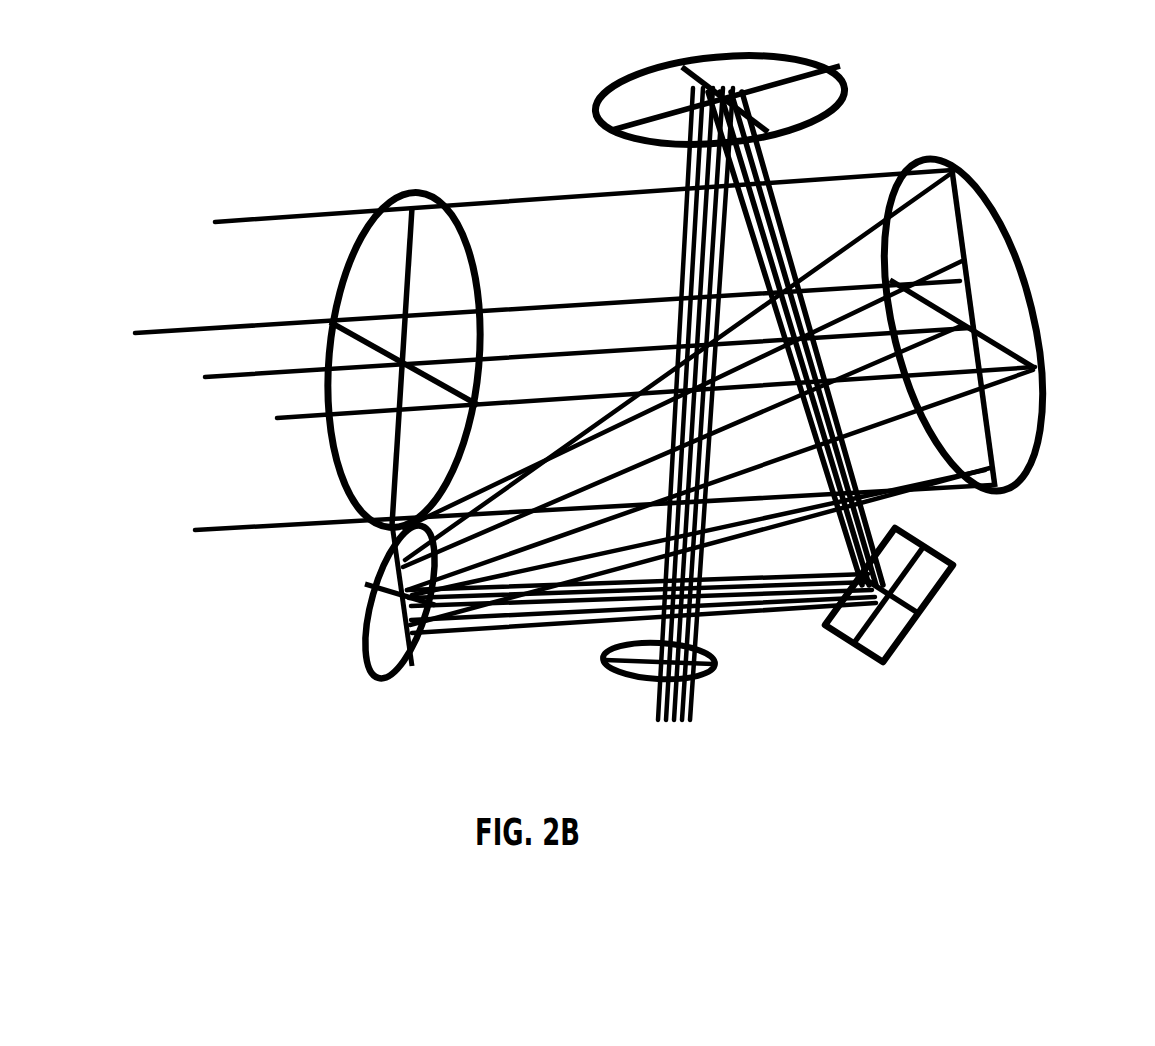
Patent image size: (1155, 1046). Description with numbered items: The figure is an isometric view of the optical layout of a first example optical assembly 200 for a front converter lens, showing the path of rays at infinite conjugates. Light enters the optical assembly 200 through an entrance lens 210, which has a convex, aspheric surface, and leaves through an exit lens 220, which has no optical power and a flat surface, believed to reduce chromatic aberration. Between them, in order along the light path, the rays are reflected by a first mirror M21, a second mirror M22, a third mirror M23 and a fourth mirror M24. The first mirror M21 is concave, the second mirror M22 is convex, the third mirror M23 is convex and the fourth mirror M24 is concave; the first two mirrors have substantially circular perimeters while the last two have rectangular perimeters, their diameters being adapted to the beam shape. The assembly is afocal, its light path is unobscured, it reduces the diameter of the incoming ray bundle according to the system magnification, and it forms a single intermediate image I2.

The optical assembly 200 is at (637, 424).
The entrance lens 210 is at (365, 296).
The exit lens 220 is at (717, 668).
The first mirror M21 is at (990, 320).
The second mirror M22 is at (398, 626).
The third mirror M23 is at (893, 583).
The fourth mirror M24 is at (660, 90).
The intermediate image I2 is at (835, 426).